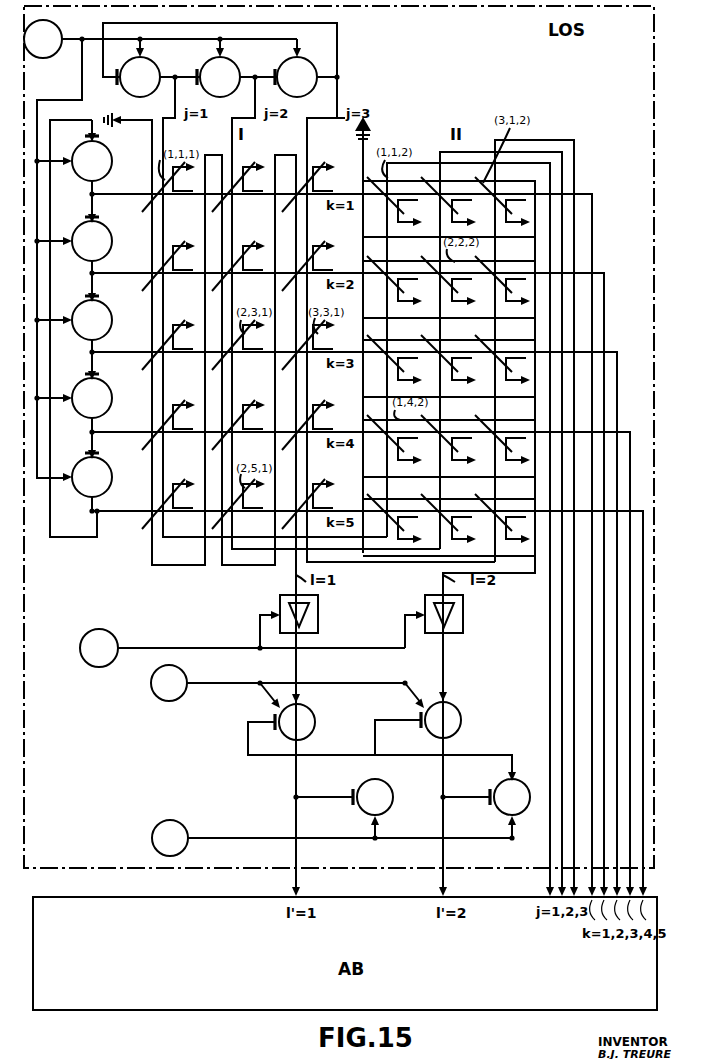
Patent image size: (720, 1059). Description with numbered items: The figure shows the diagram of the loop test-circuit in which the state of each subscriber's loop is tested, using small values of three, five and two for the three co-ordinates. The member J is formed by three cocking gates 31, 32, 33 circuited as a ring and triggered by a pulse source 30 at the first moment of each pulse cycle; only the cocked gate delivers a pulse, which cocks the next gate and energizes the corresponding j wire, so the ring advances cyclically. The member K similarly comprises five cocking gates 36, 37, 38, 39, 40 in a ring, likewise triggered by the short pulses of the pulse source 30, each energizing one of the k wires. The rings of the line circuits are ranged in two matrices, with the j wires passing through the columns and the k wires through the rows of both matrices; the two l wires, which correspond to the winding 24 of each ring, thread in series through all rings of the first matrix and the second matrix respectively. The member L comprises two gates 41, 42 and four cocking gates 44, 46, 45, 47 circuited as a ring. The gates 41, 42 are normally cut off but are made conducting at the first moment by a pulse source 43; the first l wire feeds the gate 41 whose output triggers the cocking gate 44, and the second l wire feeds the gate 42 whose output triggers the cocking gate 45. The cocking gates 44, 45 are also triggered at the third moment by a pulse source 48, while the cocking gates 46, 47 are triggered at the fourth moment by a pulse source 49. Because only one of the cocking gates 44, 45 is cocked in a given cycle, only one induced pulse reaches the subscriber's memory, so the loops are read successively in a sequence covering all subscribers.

The winding 24 is at (186, 193).
The pulse source 30 is at (58, 27).
The cocking gate 31 is at (166, 55).
The cocking gate 32 is at (246, 55).
The cocking gate 33 is at (323, 55).
The cocking gate 36 is at (106, 174).
The cocking gate 37 is at (106, 254).
The cocking gate 38 is at (106, 333).
The cocking gate 39 is at (106, 411).
The cocking gate 40 is at (106, 490).
The gate 41 is at (327, 603).
The gate 42 is at (472, 603).
The pulse source 43 is at (112, 634).
The cocking gate 44 is at (324, 708).
The cocking gate 45 is at (470, 706).
The cocking gate 46 is at (400, 782).
The cocking gate 47 is at (532, 772).
The pulse source 48 is at (169, 701).
The pulse source 49 is at (192, 814).